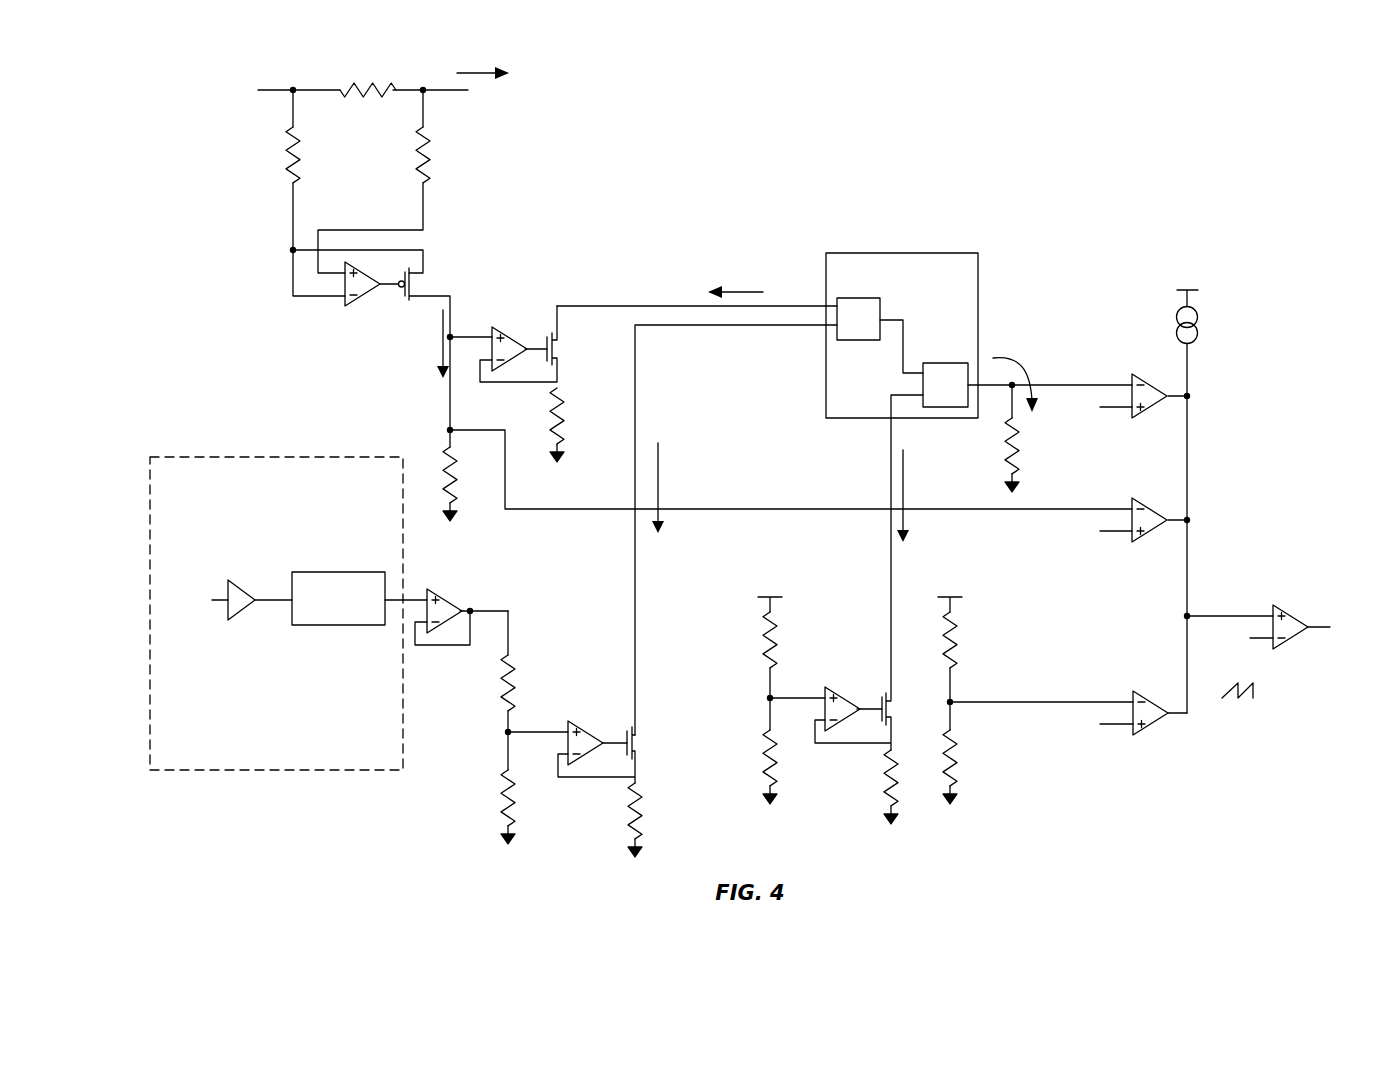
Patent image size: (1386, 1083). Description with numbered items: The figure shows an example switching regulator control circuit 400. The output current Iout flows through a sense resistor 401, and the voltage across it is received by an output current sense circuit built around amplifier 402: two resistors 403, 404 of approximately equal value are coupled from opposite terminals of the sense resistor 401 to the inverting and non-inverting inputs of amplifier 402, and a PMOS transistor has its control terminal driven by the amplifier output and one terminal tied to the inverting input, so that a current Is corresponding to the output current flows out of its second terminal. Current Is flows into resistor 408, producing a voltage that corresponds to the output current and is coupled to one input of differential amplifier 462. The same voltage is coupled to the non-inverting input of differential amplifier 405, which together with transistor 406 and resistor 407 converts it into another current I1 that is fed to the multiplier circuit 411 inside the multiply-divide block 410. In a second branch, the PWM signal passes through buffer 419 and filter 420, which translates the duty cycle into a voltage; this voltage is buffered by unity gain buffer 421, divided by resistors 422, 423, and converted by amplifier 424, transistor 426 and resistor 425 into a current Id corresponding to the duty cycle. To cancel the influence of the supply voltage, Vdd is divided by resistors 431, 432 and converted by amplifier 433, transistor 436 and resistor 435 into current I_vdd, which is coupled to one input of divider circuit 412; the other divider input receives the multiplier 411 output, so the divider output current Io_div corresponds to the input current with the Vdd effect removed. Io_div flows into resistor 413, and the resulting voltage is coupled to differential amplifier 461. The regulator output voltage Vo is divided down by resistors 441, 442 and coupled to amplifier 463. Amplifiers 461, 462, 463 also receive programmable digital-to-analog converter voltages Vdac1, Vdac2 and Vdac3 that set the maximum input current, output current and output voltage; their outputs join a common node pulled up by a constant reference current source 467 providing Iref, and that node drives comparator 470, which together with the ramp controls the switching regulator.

The circuit 400 is at (745, 449).
The sense resistor 401 is at (368, 109).
The amplifier 402 is at (361, 299).
The resistor 403 is at (266, 155).
The resistor 404 is at (453, 155).
The differential amplifier 405 is at (510, 327).
The transistor 406 is at (570, 347).
The resistor 407 is at (581, 425).
The resistor 408 is at (473, 484).
The multiply-divide circuit 410 is at (806, 463).
The multiplier circuit 411 is at (860, 341).
The divider circuit 412 is at (937, 363).
The resistor 413 is at (1038, 438).
The buffer 419 is at (243, 612).
The filter 420 is at (347, 626).
The buffer 421 is at (443, 590).
The resistor 422 is at (497, 680).
The resistor 423 is at (497, 790).
The amplifier 424 is at (585, 721).
The resistor 425 is at (660, 820).
The transistor 426 is at (640, 742).
The resistor 431 is at (758, 640).
The resistor 432 is at (758, 758).
The amplifier 433 is at (845, 688).
The resistor 435 is at (880, 775).
The transistor 436 is at (891, 710).
The resistor 441 is at (960, 636).
The resistor 442 is at (974, 767).
The differential amplifier 461 is at (1152, 378).
The differential amplifier 462 is at (1152, 500).
The amplifier 463 is at (1152, 692).
The reference current source 467 is at (1198, 312).
The comparator 470 is at (1292, 605).